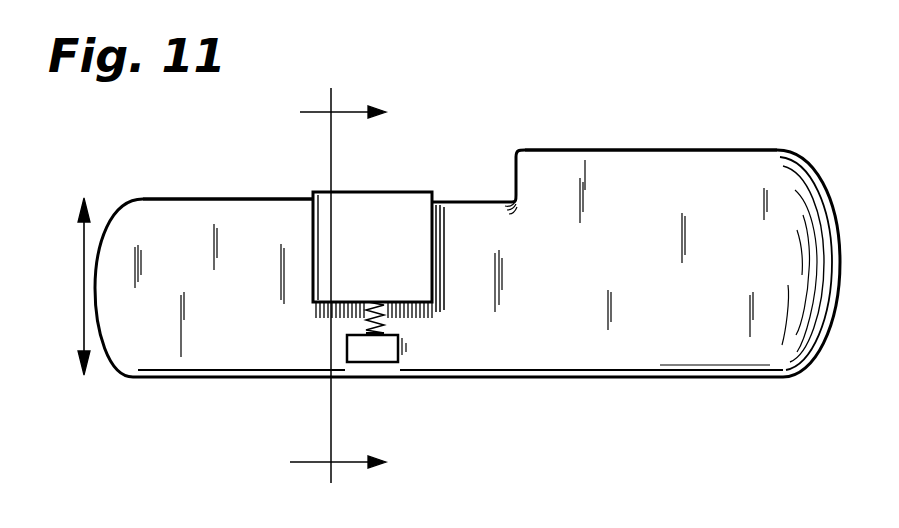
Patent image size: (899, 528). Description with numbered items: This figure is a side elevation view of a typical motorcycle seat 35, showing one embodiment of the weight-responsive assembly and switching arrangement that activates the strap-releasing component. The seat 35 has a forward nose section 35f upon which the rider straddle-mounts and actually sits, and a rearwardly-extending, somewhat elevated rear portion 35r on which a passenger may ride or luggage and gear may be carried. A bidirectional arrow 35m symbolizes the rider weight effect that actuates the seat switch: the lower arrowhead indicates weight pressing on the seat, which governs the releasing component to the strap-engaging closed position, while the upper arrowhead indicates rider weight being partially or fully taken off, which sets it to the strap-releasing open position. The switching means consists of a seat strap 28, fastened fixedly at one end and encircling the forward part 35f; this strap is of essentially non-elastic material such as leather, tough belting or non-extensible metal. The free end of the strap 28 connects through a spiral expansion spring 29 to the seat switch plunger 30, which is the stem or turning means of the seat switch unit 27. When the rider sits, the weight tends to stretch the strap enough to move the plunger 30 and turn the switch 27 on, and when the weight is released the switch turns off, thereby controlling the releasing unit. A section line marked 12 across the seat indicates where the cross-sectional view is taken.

The motorcycle seat 35 is at (112, 169).
The forward nose section of seat 35f is at (188, 198).
The rear portion of seat 35r is at (612, 149).
The bidirectional arrow 35m is at (84, 275).
The section line 12 is at (335, 280).
The seat strap 28 is at (388, 192).
The spiral expansion spring 29 is at (384, 318).
The seat switch plunger 30 is at (366, 331).
The seat switch unit 27 is at (377, 364).